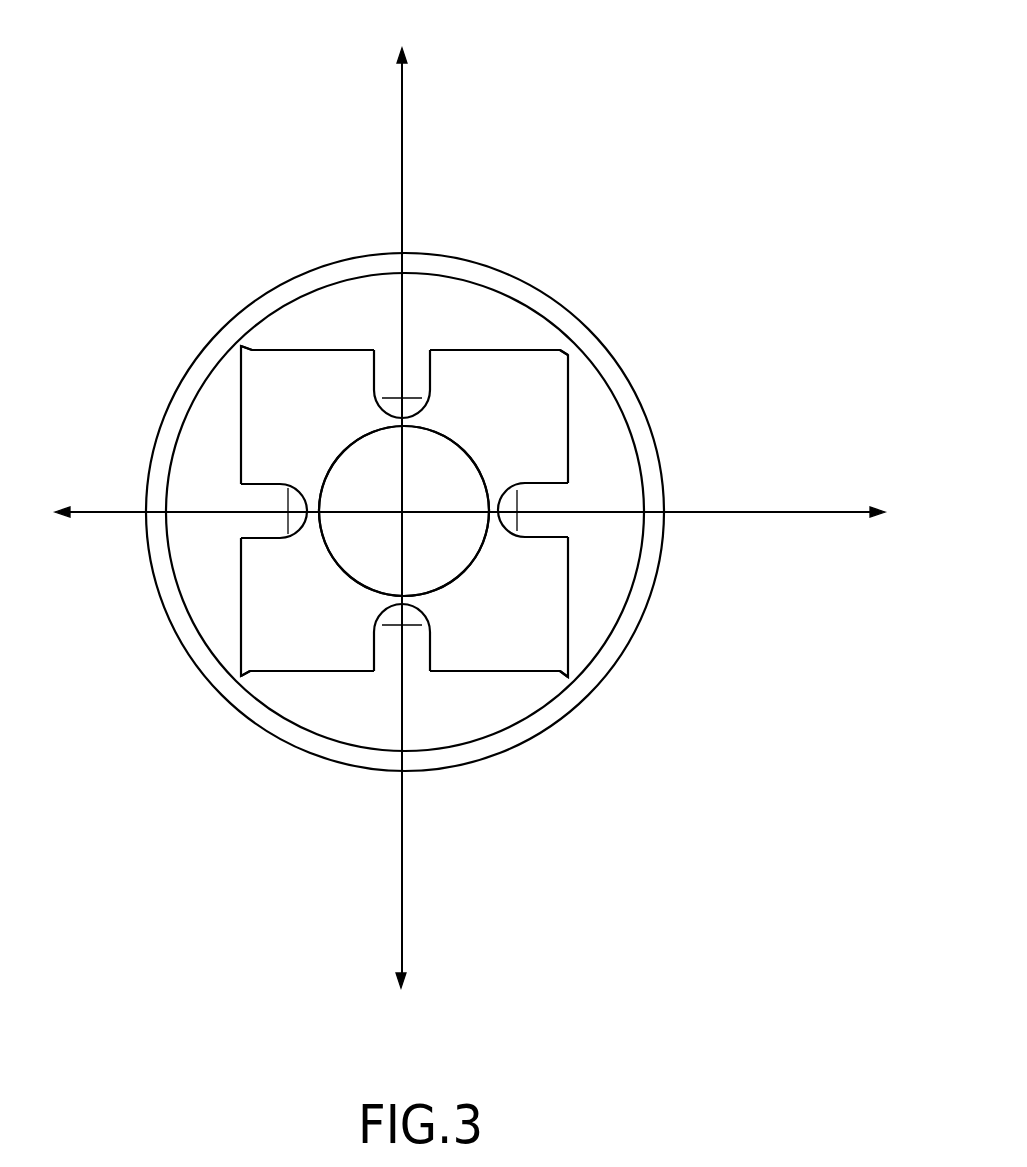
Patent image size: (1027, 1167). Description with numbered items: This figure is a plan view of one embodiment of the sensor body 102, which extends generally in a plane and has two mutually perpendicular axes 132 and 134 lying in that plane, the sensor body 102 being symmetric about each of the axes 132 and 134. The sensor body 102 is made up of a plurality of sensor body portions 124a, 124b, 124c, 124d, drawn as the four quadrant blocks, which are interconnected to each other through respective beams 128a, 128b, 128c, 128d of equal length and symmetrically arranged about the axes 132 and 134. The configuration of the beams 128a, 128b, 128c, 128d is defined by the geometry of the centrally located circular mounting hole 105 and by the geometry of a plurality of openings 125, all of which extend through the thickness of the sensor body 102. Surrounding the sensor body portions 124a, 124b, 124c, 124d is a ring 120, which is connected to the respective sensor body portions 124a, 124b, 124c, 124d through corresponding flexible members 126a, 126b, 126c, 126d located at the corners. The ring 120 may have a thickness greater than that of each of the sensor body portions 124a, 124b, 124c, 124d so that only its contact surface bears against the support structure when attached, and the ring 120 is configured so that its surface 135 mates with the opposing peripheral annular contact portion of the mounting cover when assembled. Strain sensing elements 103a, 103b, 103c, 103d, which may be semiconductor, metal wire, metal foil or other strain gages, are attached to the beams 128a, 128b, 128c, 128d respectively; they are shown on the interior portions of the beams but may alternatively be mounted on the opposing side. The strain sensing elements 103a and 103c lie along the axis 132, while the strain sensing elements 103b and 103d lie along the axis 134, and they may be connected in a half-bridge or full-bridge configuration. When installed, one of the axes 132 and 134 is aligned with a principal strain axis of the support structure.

The sensor body 102 is at (640, 162).
The strain sensing element 103a is at (400, 428).
The strain sensing element 103b is at (322, 515).
The strain sensing element 103c is at (410, 593).
The strain sensing element 103d is at (489, 507).
The circular mounting hole 105 is at (448, 462).
The ring 120 is at (572, 298).
The sensor body portion 124a is at (295, 372).
The sensor body portion 124b is at (500, 362).
The sensor body portion 124c is at (318, 655).
The sensor body portion 124d is at (525, 650).
The opening 125 is at (390, 368).
The flexible member 126a is at (243, 347).
The flexible member 126b is at (568, 350).
The flexible member 126c is at (243, 672).
The flexible member 126d is at (565, 672).
The beam 128a is at (397, 392).
The beam 128b is at (287, 508).
The beam 128c is at (410, 628).
The beam 128d is at (518, 505).
The axis 132 is at (403, 497).
The axis 134 is at (493, 512).
The surface 135 is at (645, 420).